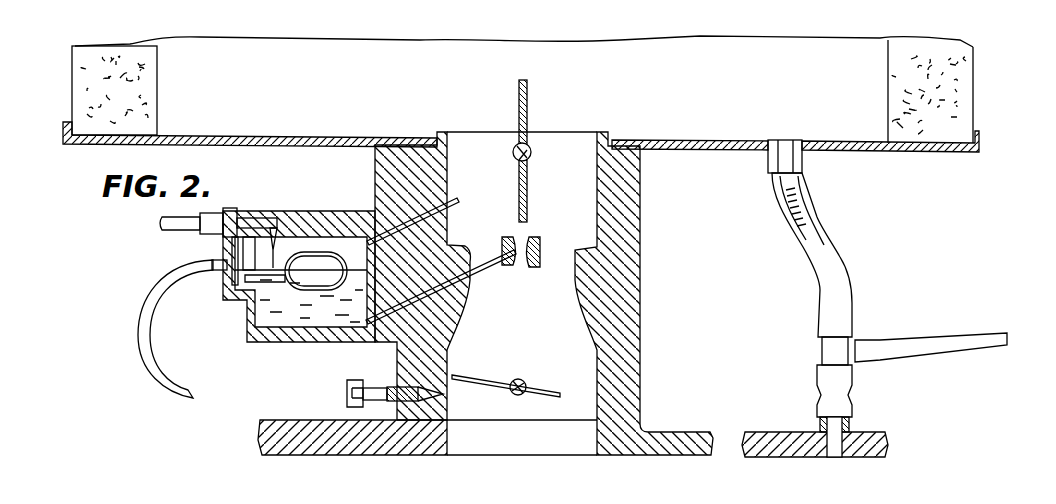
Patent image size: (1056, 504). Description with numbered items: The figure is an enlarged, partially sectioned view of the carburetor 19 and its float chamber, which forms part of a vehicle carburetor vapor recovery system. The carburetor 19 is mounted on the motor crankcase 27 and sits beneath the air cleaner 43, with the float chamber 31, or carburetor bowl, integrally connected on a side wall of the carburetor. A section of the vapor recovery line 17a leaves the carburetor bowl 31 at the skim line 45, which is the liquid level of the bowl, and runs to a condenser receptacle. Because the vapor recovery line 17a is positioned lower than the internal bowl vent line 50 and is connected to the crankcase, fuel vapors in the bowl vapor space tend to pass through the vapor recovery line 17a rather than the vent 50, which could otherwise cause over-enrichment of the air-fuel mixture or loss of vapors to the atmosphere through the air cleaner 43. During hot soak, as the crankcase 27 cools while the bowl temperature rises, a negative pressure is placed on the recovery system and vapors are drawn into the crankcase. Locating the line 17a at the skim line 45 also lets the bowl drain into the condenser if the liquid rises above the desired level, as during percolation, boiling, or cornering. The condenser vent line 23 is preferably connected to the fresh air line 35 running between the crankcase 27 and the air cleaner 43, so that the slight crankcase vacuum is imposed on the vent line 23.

The vapor recovery line section 17a is at (157, 288).
The carburetor 19 is at (635, 218).
The condenser vent line 23 is at (952, 340).
The motor crankcase 27 is at (788, 433).
The float chamber 31 is at (300, 343).
The fresh air line 35 is at (820, 268).
The air cleaner 43 is at (932, 168).
The skim line 45 is at (356, 267).
The internal bowl vent line 50 is at (458, 197).